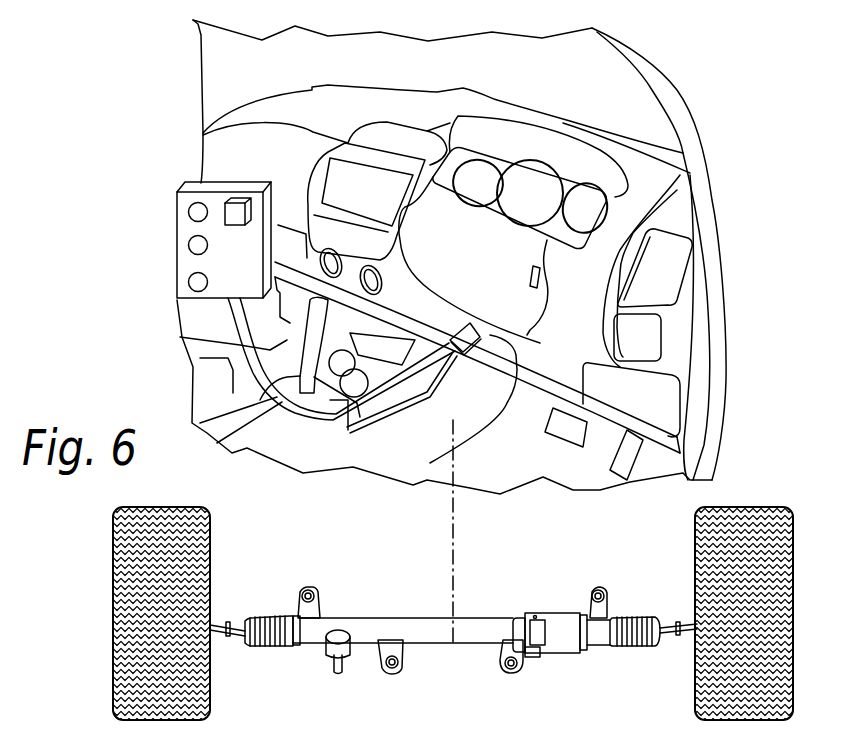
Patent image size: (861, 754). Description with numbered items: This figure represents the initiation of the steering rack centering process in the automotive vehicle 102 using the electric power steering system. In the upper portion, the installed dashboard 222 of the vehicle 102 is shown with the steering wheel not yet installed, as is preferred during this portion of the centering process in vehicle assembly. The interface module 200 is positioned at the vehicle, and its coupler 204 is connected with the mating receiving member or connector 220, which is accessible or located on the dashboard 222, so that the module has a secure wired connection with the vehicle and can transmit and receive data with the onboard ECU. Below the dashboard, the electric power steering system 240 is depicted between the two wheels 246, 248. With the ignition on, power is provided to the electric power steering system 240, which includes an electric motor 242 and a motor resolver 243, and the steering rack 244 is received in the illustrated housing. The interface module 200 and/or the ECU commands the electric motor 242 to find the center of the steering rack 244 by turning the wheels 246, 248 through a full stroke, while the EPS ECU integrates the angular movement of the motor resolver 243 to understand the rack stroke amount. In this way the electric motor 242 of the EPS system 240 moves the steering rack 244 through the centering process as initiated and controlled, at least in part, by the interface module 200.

The vehicle 102 is at (637, 58).
The interface module 200 is at (177, 172).
The coupler 204 is at (300, 414).
The connector 220 is at (517, 447).
The dashboard 222 is at (355, 108).
The electric power steering system 240 is at (453, 565).
The electric motor 242 is at (537, 613).
The motor resolver 243 is at (533, 657).
The steering rack 244 is at (397, 627).
The wheel 246 is at (210, 548).
The wheel 248 is at (697, 550).